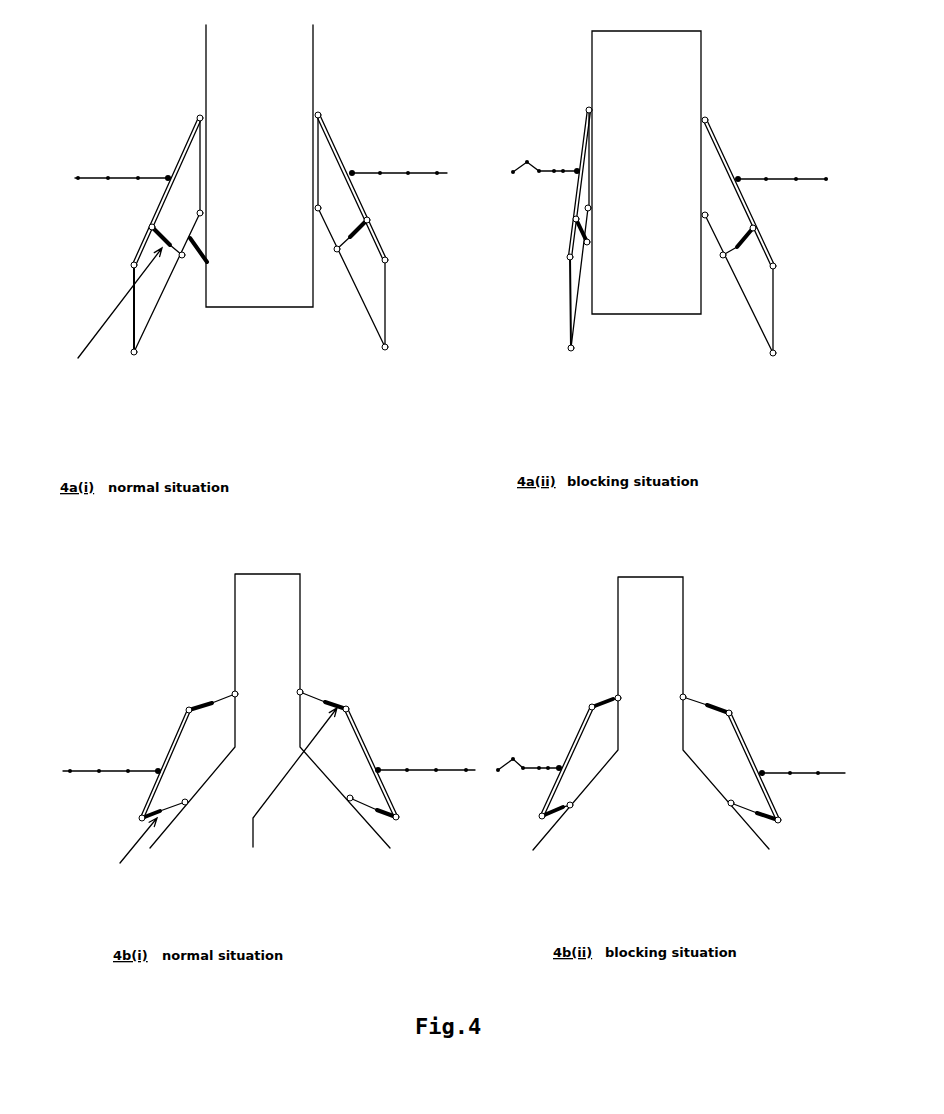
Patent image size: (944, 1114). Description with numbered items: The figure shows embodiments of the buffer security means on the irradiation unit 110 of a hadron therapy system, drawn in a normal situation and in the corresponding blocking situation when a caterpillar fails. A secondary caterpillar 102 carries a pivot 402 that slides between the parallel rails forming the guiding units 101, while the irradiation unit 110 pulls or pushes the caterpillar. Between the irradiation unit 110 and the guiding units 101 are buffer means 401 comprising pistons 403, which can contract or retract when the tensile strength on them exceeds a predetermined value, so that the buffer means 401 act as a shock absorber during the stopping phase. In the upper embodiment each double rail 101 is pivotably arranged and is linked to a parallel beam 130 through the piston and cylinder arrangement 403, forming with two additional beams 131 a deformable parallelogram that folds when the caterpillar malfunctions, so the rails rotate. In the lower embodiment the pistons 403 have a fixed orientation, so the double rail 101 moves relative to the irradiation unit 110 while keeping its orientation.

The irradiation unit 110 is at (459, 437).
The guiding units 101 is at (176, 137).
The secondary caterpillar 102 is at (115, 165).
The pivot 402 is at (159, 170).
The additional beams 131 is at (202, 170).
The parallel beam 130 is at (214, 257).
The buffer means 401 is at (175, 320).
The pistons 403 is at (202, 568).